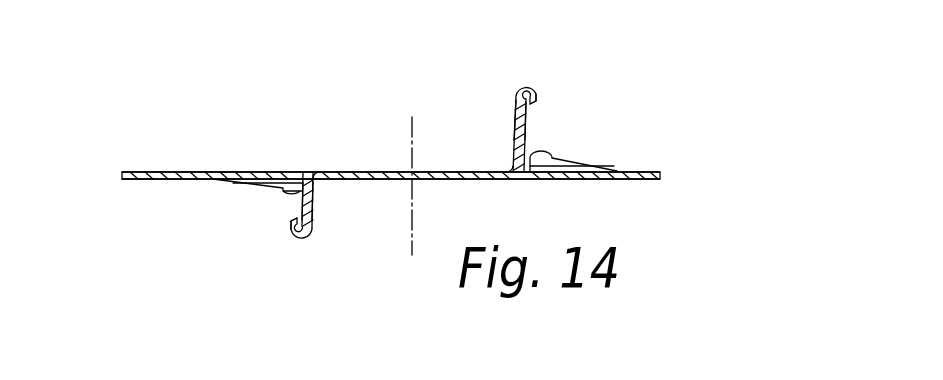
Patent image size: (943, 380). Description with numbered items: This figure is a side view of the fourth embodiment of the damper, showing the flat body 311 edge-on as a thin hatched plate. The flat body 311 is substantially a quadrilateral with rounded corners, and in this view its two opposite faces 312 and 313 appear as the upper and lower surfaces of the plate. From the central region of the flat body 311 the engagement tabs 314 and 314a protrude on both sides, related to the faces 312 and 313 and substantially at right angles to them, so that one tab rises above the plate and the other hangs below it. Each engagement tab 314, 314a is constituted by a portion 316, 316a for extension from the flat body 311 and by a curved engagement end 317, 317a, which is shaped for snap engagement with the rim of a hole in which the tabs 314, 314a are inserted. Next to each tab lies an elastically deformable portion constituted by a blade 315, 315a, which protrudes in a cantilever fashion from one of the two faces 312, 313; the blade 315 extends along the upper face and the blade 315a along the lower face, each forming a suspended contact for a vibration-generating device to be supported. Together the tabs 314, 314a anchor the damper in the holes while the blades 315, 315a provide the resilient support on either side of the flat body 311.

The flat body 311 is at (668, 170).
The face 312 is at (340, 172).
The face 313 is at (398, 180).
The engagement tab 314 is at (538, 130).
The blade 315 is at (578, 158).
The extension portion 316 is at (522, 133).
The curved engagement end 317 is at (538, 94).
The engagement tab 314a is at (278, 237).
The blade 315a is at (250, 185).
The extension portion 316a is at (298, 205).
The curved engagement end 317a is at (307, 240).